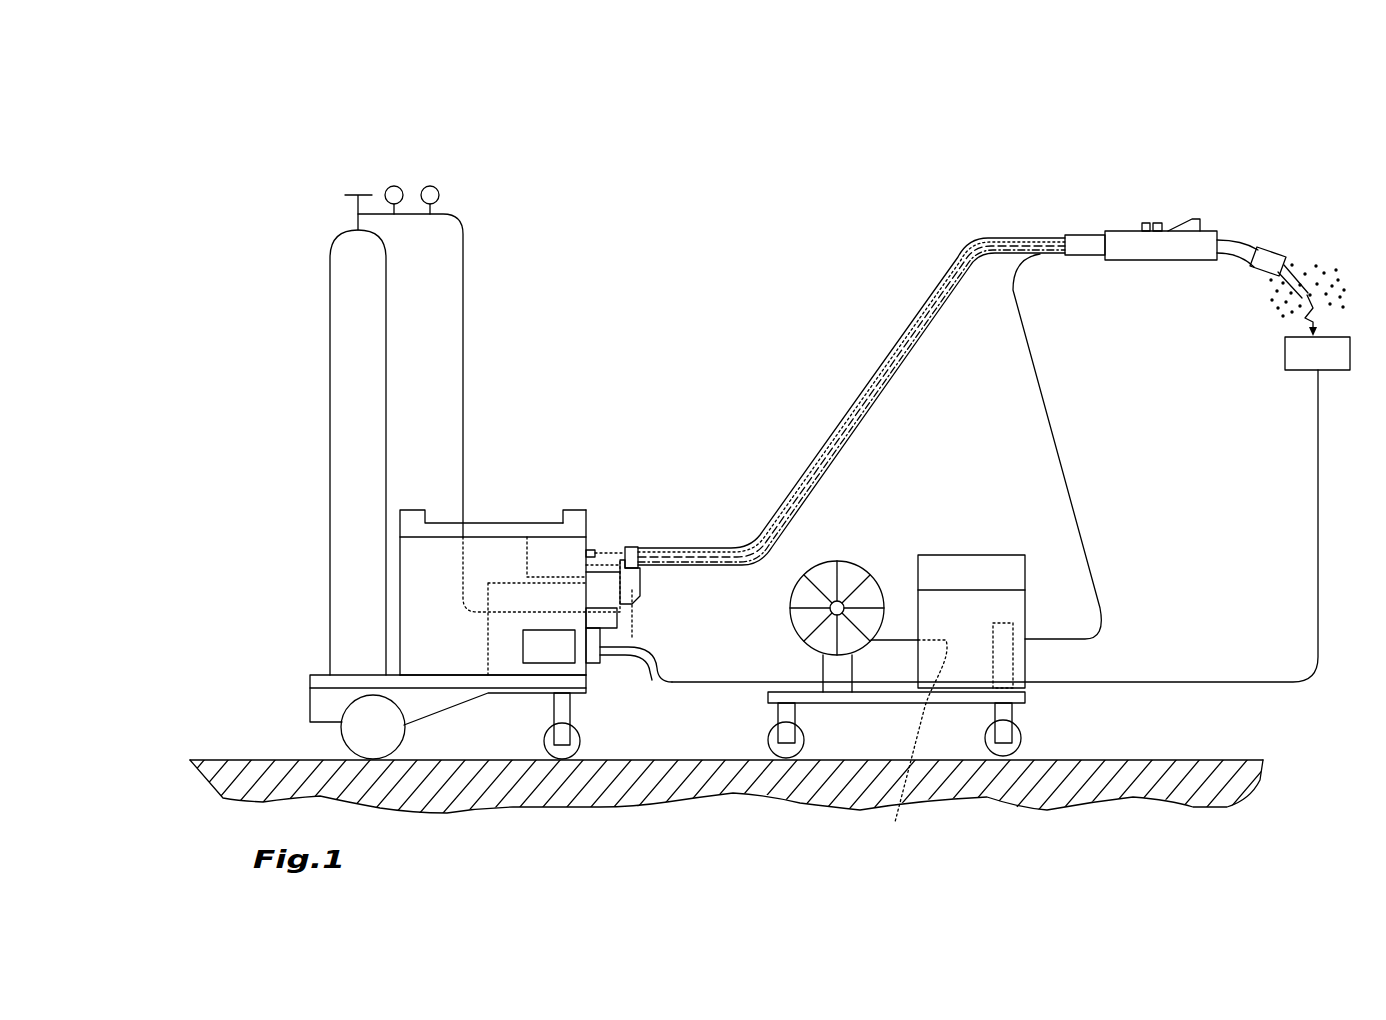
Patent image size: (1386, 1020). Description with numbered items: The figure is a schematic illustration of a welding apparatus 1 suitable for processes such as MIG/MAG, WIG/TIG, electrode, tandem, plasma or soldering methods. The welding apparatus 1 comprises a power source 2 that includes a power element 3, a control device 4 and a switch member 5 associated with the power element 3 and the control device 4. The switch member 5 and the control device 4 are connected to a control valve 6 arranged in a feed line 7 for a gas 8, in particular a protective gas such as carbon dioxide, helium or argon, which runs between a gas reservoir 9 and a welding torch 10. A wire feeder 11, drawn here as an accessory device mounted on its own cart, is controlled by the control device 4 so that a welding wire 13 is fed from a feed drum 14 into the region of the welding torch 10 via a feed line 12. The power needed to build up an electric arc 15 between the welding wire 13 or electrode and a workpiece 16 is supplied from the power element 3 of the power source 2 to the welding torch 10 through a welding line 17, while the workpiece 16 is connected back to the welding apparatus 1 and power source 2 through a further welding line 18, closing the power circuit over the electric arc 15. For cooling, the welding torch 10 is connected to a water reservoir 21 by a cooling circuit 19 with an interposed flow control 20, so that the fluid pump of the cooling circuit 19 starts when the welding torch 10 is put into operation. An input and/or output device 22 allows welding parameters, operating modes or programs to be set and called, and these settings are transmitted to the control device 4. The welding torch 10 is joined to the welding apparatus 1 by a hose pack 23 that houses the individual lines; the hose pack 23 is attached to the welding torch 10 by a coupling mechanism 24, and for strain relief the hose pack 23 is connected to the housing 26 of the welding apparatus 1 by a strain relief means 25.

The welding apparatus 1 is at (258, 178).
The power source 2 is at (538, 397).
The power element 3 is at (542, 652).
The control device 4 is at (477, 639).
The switch member 5 is at (597, 678).
The control valve 6 is at (603, 625).
The feed line 7 is at (995, 250).
The gas 8 is at (1290, 240).
The gas reservoir 9 is at (352, 307).
The welding torch 10 is at (1205, 203).
The wire feeder 11 is at (1072, 722).
The feed line 12 is at (1065, 475).
The welding wire 13 is at (1300, 280).
The feed drum 14 is at (847, 577).
The electric arc 15 is at (1292, 320).
The workpiece 16 is at (1327, 353).
The welding line 17 is at (930, 292).
The further welding line 18 is at (1318, 545).
The cooling circuit 19 is at (787, 477).
The flow control 20 is at (595, 550).
The water reservoir 21 is at (547, 550).
The input and/or output device 22 is at (578, 530).
The hose pack 23 is at (692, 553).
The coupling mechanism 24 is at (1085, 243).
The strain relief means 25 is at (633, 552).
The housing 26 is at (635, 580).